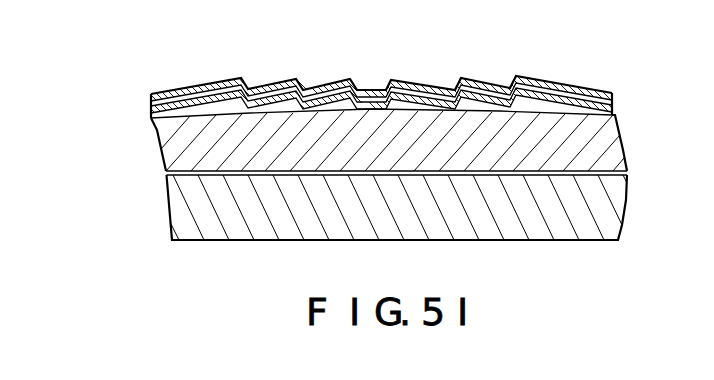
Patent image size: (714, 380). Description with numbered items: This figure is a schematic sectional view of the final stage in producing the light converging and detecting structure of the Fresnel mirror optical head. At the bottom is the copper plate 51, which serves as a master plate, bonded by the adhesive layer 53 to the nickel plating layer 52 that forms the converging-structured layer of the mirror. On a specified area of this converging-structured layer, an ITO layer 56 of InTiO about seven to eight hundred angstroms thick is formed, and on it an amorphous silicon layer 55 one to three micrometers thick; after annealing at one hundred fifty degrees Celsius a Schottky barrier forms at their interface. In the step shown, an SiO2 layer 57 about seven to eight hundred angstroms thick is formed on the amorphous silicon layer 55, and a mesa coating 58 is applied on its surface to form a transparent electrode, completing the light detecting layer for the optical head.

The copper plate 51 is at (619, 208).
The nickel plating layer 52 is at (616, 154).
The adhesive layer 53 is at (166, 172).
The amorphous silicon layer 55 is at (152, 108).
The ITO layer 56 is at (614, 114).
The SiO2 layer 57 is at (613, 95).
The mesa coating 58 is at (389, 87).